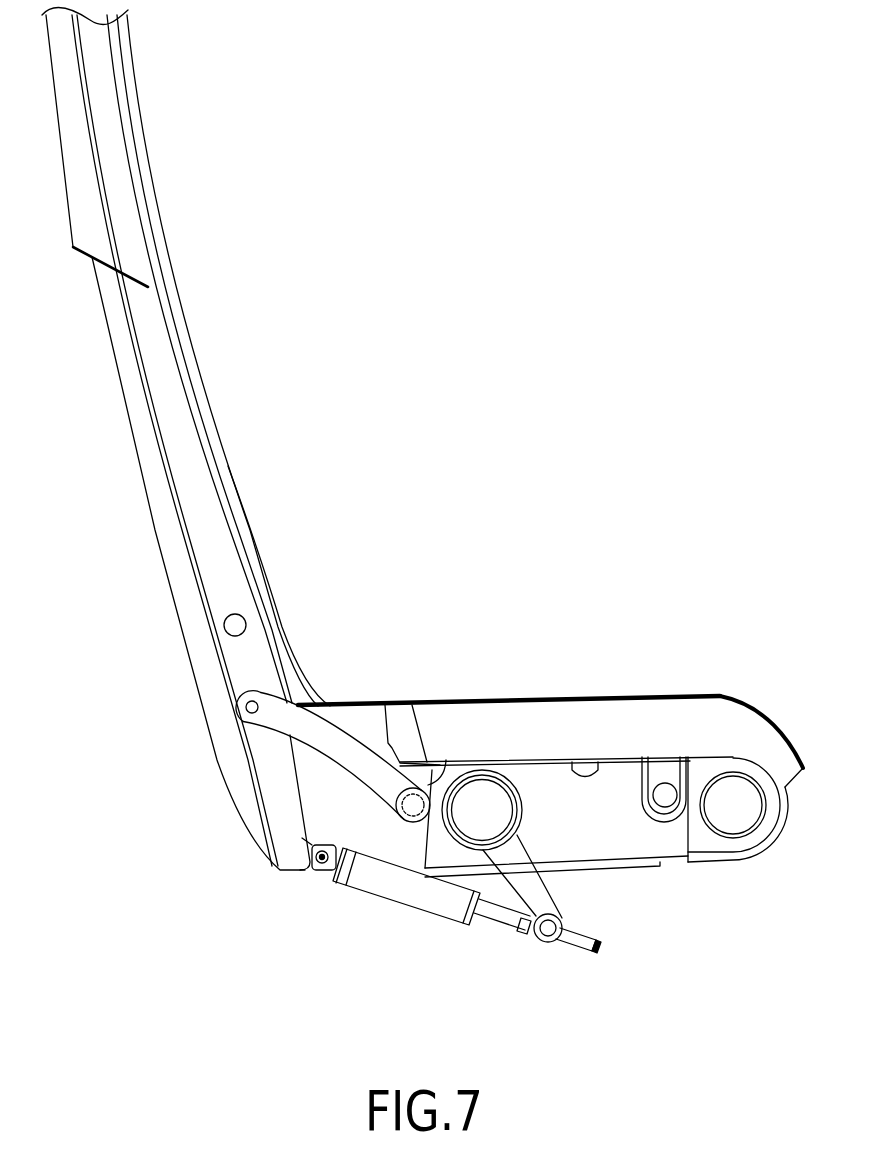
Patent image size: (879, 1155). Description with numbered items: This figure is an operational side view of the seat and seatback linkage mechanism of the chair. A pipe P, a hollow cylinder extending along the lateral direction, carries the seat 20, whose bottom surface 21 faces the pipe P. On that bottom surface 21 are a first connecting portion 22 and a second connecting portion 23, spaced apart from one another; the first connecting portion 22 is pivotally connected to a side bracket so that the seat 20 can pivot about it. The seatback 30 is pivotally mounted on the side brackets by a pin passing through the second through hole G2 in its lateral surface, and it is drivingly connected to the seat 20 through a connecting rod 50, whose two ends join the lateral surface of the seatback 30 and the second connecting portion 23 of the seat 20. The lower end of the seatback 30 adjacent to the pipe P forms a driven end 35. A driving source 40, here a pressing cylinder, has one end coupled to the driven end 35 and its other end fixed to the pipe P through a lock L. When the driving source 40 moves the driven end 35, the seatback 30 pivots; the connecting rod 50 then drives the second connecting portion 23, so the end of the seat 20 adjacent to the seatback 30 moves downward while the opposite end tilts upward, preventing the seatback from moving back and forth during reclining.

The seat 20 is at (645, 693).
The bottom surface 21 is at (600, 758).
The first connecting portion 22 is at (672, 781).
The second connecting portion 23 is at (446, 760).
The seatback 30 is at (148, 191).
The driven end 35 is at (296, 880).
The driving source 40 is at (401, 891).
The connecting rod 50 is at (358, 737).
The pipe P is at (522, 828).
The lock L is at (547, 893).
The second through hole G2 is at (224, 627).